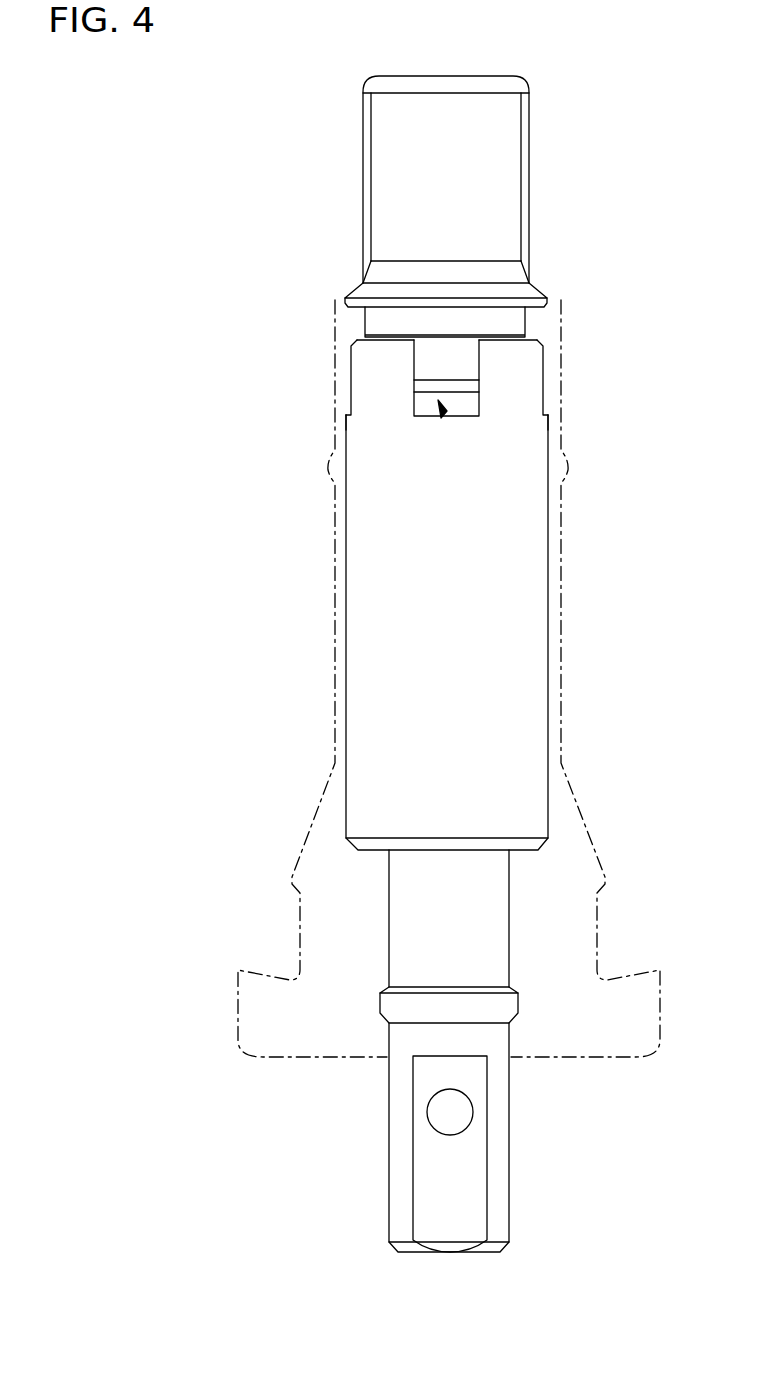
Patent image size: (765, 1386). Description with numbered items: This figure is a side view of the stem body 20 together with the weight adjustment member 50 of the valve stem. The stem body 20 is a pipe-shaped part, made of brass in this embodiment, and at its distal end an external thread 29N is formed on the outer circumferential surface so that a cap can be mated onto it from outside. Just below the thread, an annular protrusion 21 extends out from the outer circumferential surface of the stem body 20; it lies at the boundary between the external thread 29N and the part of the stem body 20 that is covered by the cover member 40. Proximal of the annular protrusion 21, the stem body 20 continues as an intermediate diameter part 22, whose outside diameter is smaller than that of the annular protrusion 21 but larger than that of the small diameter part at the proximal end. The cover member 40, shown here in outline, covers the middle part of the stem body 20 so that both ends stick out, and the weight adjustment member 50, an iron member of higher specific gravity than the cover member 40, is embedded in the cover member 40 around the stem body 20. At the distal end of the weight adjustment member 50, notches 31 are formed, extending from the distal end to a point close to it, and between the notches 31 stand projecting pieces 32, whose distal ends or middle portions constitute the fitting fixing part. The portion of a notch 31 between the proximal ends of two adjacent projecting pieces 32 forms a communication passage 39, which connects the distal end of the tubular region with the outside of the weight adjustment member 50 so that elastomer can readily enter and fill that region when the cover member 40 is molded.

The external thread 29N is at (482, 177).
The annular protrusion 21 is at (503, 303).
The intermediate diameter part 22 is at (463, 365).
The notch 31 is at (349, 415).
The projecting piece 32 is at (385, 370).
The communication passage 39 is at (443, 417).
The weight adjustment member 50 is at (505, 511).
The cover member 40 is at (563, 695).
The stem body 20 is at (478, 895).